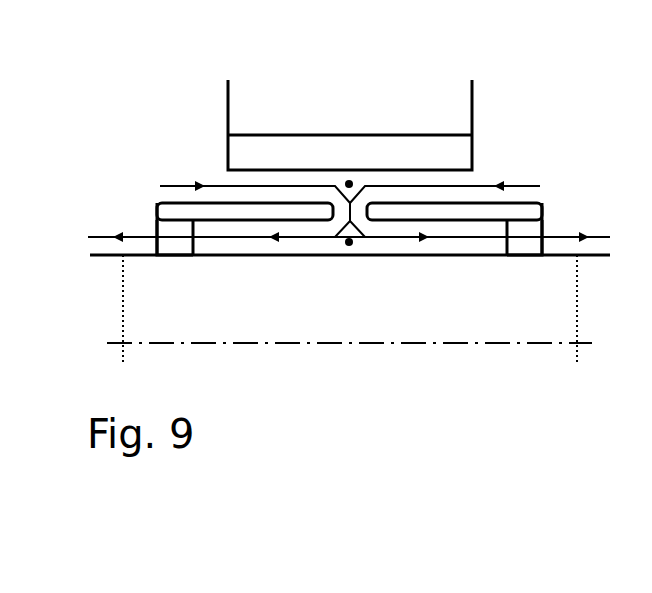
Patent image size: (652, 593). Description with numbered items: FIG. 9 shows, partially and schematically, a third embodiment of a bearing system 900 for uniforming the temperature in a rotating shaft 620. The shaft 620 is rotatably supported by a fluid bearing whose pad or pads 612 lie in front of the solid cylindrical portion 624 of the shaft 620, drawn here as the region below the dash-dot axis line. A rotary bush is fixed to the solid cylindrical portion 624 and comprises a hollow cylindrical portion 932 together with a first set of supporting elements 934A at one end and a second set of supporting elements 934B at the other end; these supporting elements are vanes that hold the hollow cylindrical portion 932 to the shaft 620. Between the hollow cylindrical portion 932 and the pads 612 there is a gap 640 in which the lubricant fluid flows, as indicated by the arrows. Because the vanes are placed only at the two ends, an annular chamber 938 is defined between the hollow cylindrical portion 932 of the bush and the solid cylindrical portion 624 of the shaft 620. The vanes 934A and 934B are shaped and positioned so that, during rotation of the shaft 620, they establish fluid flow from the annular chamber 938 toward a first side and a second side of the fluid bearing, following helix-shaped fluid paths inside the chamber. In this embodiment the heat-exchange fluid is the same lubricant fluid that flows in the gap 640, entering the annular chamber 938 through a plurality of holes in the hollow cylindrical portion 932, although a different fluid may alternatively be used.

The bearing system 900 is at (181, 85).
The pad 612 is at (299, 152).
The gap 640 is at (349, 181).
The hollow cylindrical portion 932 is at (400, 208).
The first set of supporting elements 934A is at (176, 243).
The second set of supporting elements 934B is at (523, 245).
The annular chamber 938 is at (349, 246).
The solid cylindrical portion 624 is at (349, 377).
The shaft 620 is at (262, 320).